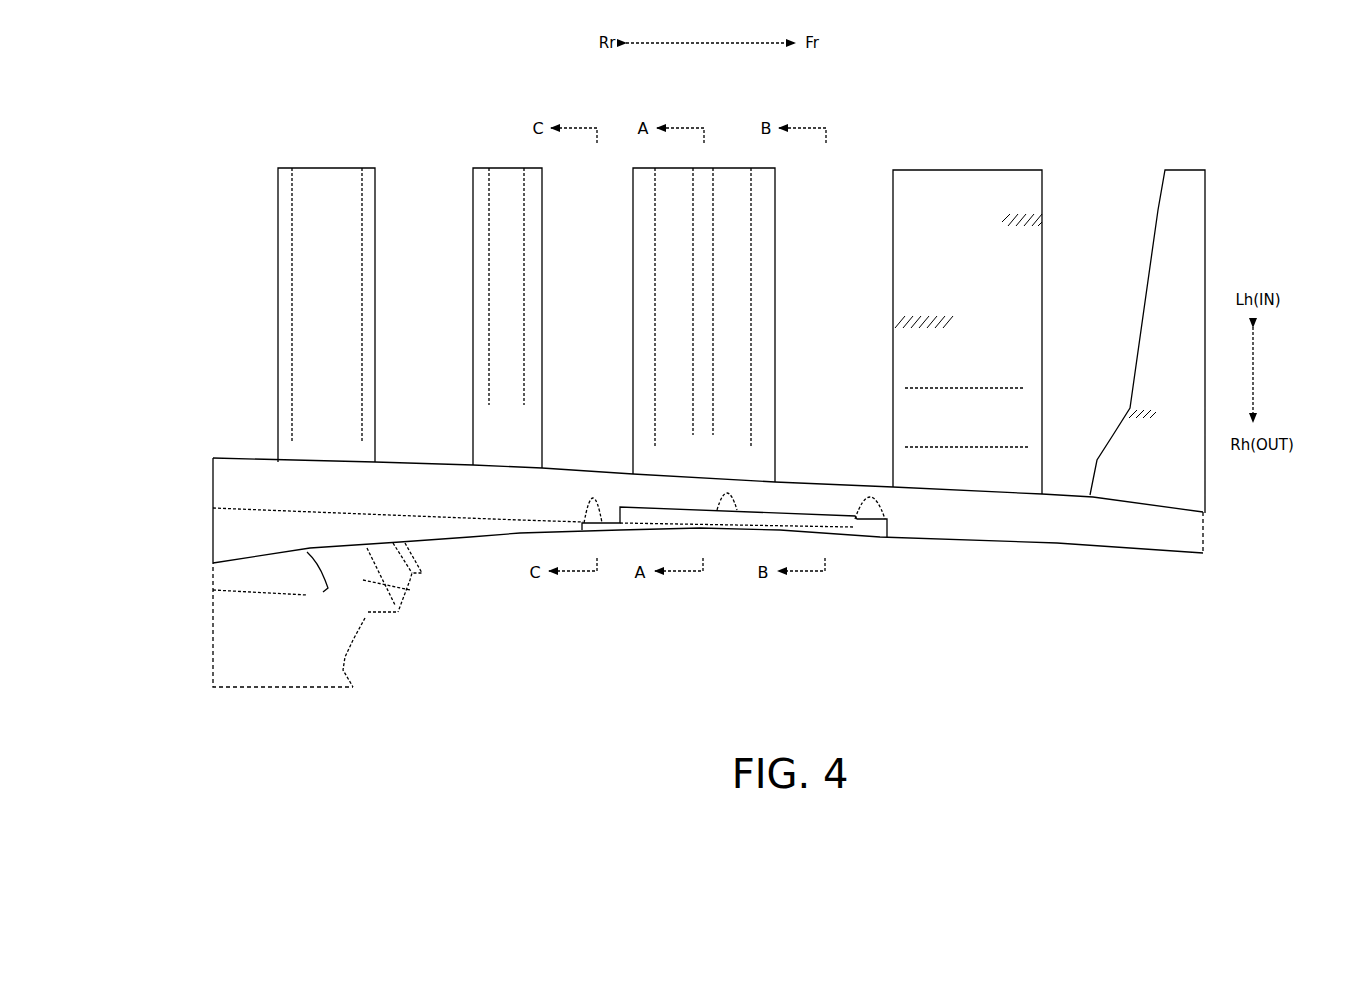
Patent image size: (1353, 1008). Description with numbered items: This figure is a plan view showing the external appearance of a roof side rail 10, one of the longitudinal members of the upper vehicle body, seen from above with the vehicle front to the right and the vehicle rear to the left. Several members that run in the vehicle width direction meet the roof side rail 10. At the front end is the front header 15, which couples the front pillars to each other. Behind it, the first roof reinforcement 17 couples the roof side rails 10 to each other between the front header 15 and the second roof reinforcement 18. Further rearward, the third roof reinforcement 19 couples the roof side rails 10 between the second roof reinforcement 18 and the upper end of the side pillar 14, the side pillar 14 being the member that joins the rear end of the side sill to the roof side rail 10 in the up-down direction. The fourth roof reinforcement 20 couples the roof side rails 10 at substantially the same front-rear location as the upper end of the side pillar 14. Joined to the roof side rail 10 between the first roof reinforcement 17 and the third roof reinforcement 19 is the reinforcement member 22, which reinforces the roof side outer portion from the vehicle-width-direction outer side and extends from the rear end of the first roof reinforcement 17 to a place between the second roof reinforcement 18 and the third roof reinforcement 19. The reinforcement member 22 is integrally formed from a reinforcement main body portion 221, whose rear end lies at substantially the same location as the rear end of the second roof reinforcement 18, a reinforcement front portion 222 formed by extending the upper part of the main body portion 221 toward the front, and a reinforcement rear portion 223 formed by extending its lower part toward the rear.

The roof side rail 10 is at (1055, 548).
The side pillar 14 is at (407, 588).
The front header 15 is at (1157, 208).
The first roof reinforcement 17 is at (1044, 315).
The second roof reinforcement 18 is at (631, 280).
The third roof reinforcement 19 is at (471, 287).
The fourth roof reinforcement 20 is at (276, 213).
The reinforcement member 22 is at (801, 508).
The reinforcement main body portion 221 is at (733, 500).
The reinforcement front portion 222 is at (882, 507).
The reinforcement rear portion 223 is at (602, 530).